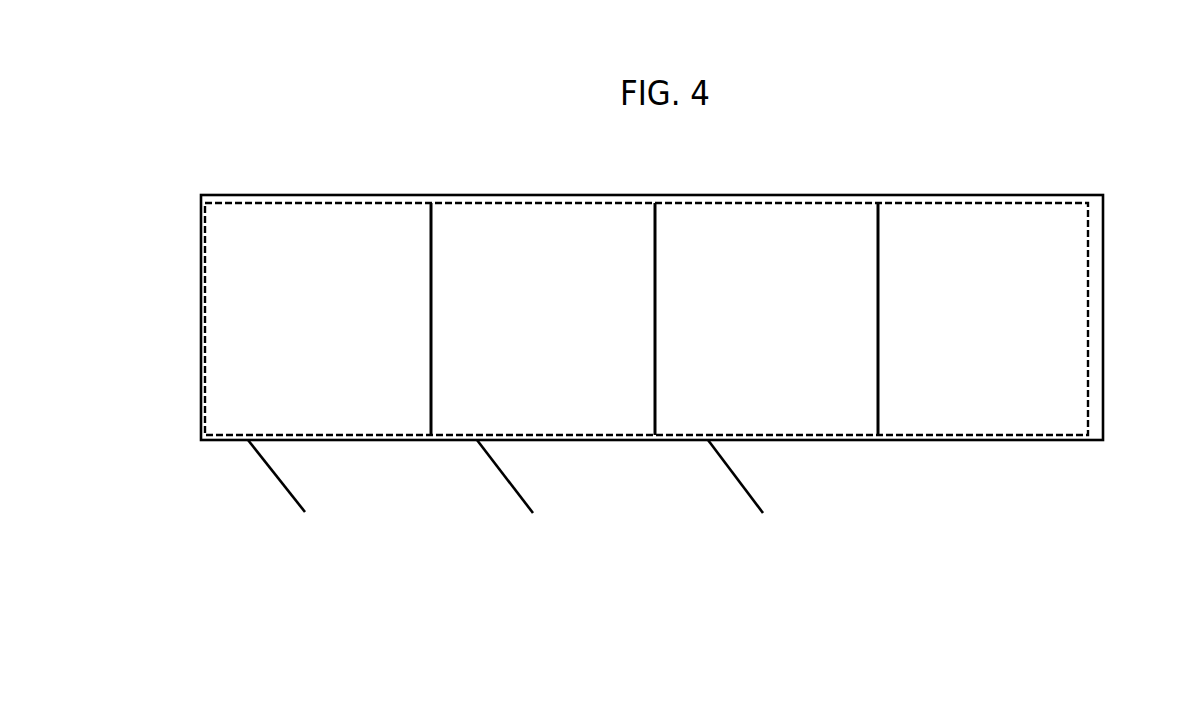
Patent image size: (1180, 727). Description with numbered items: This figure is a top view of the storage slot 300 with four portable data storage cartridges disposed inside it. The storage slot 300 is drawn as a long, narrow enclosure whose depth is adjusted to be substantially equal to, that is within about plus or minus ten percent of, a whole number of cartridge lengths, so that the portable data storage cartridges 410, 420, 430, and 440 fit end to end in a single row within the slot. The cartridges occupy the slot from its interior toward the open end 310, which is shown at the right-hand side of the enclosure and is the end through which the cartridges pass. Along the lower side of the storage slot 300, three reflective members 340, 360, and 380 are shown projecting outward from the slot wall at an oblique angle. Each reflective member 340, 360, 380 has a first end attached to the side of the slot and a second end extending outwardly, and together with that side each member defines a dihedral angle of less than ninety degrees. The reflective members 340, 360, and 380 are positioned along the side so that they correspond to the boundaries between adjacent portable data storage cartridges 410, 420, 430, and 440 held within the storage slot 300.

The storage slot 300 is at (657, 590).
The open end 310 is at (1105, 275).
The reflective member 340 is at (737, 483).
The reflective member 360 is at (507, 483).
The reflective member 380 is at (280, 482).
The portable data storage cartridge 410 is at (982, 316).
The portable data storage cartridge 420 is at (764, 316).
The portable data storage cartridge 430 is at (541, 316).
The portable data storage cartridge 440 is at (311, 316).